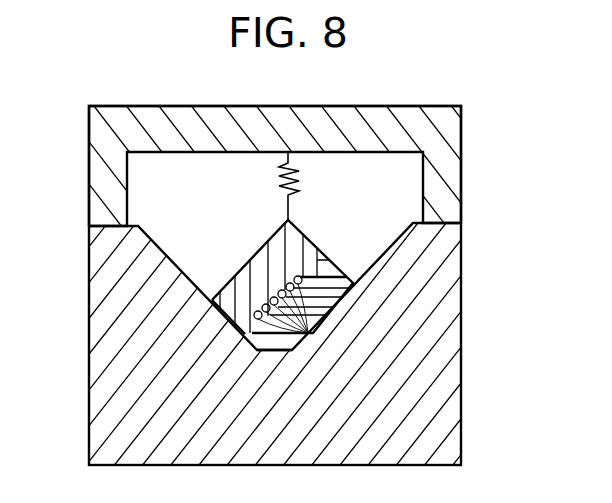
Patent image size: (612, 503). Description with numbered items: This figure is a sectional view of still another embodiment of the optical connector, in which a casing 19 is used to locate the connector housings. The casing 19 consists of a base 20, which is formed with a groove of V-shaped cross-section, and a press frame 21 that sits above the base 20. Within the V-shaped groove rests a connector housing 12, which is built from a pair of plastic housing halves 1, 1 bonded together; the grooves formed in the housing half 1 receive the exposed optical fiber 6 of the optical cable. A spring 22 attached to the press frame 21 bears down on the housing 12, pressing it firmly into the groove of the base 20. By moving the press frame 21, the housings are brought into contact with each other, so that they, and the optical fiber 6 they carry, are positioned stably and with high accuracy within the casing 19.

The housing half 1 is at (238, 318).
The optical fiber 6 is at (295, 322).
The housing 12 is at (334, 242).
The casing 19 is at (388, 100).
The base 20 is at (99, 332).
The press frame 21 is at (187, 118).
The spring 22 is at (301, 182).